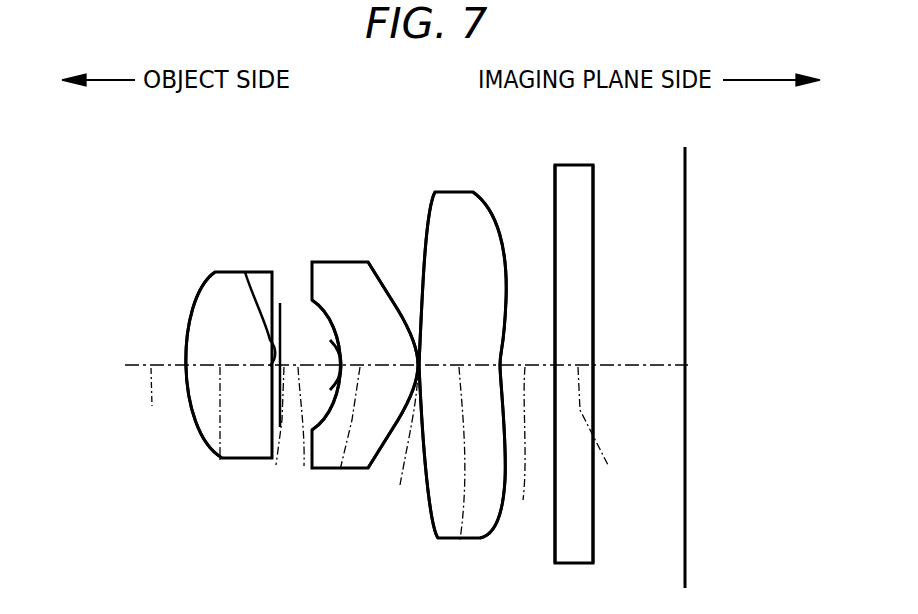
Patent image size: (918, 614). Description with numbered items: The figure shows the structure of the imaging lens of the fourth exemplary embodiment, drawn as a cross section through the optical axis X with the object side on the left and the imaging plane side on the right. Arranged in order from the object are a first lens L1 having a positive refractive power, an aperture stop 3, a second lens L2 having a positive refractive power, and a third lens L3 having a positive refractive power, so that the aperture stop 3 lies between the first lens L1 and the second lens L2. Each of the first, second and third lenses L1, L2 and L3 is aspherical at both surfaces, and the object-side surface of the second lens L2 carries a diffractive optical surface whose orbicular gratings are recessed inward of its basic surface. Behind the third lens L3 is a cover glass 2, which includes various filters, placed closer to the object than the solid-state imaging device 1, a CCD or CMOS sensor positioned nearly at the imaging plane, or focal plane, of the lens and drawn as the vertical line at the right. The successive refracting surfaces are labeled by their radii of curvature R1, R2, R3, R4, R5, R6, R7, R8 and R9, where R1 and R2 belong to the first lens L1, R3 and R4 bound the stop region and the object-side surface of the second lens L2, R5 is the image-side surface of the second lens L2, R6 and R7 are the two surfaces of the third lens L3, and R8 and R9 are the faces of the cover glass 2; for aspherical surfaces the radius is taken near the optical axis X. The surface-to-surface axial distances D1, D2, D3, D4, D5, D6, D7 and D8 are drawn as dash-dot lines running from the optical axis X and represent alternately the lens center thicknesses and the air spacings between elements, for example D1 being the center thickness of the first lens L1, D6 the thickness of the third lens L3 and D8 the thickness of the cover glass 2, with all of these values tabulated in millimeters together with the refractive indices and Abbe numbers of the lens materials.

The solid-state imaging device 1 is at (685, 148).
The cover glass 2 is at (566, 170).
The aperture stop 3 is at (281, 303).
The first lens L1 is at (228, 272).
The second lens L2 is at (347, 262).
The third lens L3 is at (460, 192).
The radius of curvature of lens surface R1 is at (200, 300).
The radius of curvature of lens surface R2 is at (245, 272).
The radius of curvature of lens surface R3 is at (283, 348).
The radius of curvature of lens surface R4 is at (340, 360).
The radius of curvature of lens surface R5 is at (405, 326).
The radius of curvature of lens surface R6 is at (425, 346).
The radius of curvature of lens surface R7 is at (503, 358).
The radius of curvature of lens surface R8 is at (553, 172).
The radius of curvature of lens surface R9 is at (593, 190).
The lens surface-to-surface axial distance D1 is at (217, 433).
The lens surface-to-surface axial distance D2 is at (270, 445).
The lens surface-to-surface axial distance D3 is at (300, 435).
The lens surface-to-surface axial distance D4 is at (342, 447).
The lens surface-to-surface axial distance D5 is at (404, 443).
The lens surface-to-surface axial distance D6 is at (456, 472).
The lens surface-to-surface axial distance D7 is at (525, 455).
The lens surface-to-surface axial distance D8 is at (603, 433).
The optical axis X is at (154, 401).